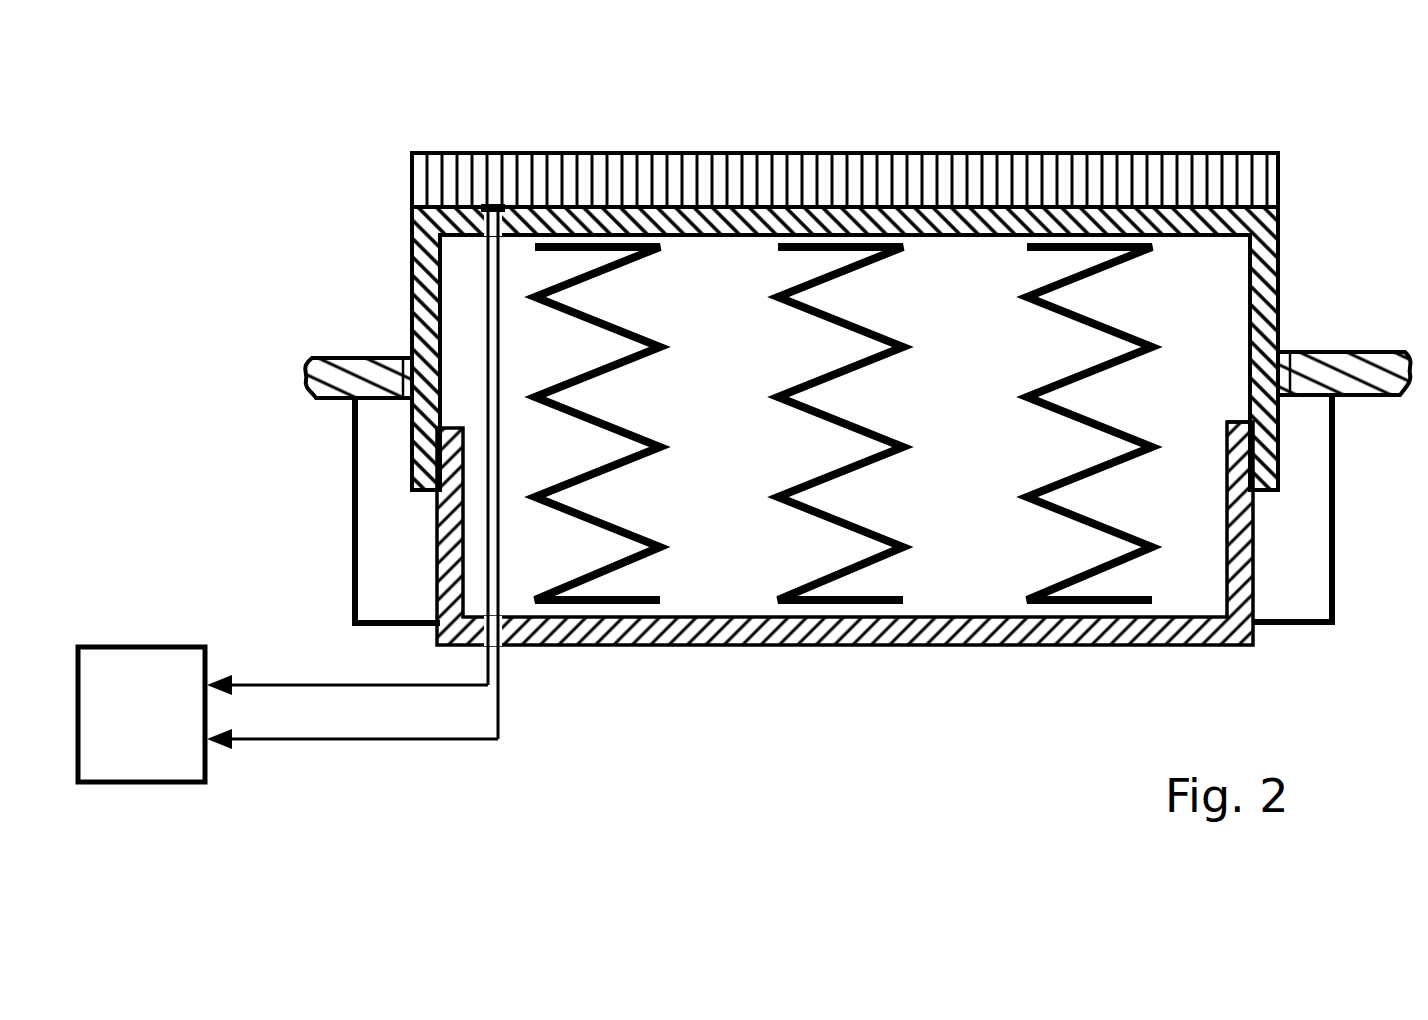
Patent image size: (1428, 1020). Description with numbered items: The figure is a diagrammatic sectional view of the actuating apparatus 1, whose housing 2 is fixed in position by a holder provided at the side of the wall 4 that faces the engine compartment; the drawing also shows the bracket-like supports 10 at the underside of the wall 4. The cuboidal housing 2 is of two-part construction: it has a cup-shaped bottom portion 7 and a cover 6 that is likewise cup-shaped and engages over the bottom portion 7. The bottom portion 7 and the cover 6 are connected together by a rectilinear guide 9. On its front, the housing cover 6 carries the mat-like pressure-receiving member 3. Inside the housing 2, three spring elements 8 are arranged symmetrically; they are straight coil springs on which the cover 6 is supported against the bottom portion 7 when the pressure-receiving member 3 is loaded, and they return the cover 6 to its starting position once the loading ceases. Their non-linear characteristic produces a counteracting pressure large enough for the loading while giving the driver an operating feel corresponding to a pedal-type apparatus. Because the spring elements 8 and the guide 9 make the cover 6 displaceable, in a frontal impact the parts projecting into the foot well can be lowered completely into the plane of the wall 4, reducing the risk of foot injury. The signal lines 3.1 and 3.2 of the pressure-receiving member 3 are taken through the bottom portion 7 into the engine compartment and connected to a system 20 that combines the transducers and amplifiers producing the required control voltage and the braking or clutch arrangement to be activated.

The actuating apparatus 1 is at (787, 401).
The housing 2 is at (1302, 230).
The pressure-receiving member 3 is at (510, 165).
The signal line 3.1 is at (348, 686).
The signal line 3.2 is at (435, 740).
The wall 4 is at (325, 372).
The cover 6 is at (1281, 291).
The bottom portion 7 is at (697, 628).
The spring elements 8 is at (1085, 530).
The rectilinear guide 9 is at (1224, 450).
The support bracket 10 is at (355, 482).
The system 20 is at (155, 665).